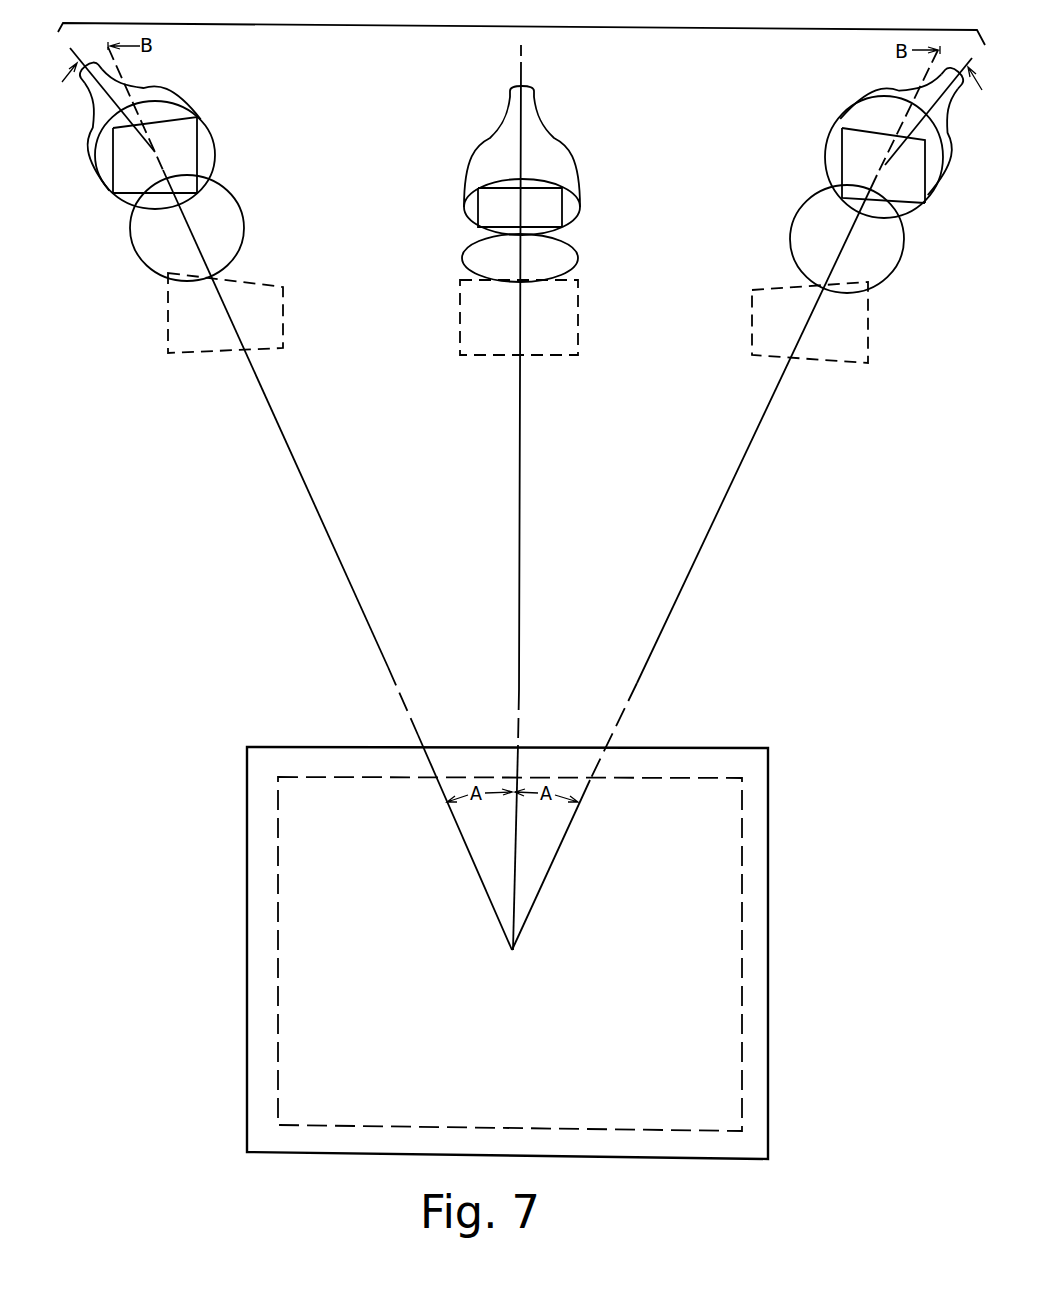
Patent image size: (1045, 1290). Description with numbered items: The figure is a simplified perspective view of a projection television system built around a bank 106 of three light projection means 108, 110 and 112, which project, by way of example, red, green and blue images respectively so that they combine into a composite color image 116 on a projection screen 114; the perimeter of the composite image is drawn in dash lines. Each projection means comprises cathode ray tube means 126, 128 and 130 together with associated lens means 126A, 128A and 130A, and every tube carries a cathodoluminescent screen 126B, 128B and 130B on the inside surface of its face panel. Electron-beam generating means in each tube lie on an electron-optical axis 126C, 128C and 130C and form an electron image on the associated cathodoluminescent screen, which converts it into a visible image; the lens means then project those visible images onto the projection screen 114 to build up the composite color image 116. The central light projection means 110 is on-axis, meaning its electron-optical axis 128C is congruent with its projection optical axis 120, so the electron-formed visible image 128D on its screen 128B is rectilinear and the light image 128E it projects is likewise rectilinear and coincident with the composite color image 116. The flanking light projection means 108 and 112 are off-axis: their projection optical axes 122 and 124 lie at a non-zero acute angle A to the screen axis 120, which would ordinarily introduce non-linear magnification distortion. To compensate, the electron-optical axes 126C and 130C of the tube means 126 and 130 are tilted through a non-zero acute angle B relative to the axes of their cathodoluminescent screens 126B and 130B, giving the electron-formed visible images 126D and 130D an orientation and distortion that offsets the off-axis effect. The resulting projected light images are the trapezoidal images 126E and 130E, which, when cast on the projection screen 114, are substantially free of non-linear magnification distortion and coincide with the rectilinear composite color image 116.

The bank 106 is at (523, 28).
The light projection means 108 is at (165, 196).
The light projection means 110 is at (516, 220).
The light projection means 112 is at (870, 203).
The projection screen 114 is at (247, 927).
The composite color image 116 is at (278, 995).
The projection optical axis 120 is at (517, 663).
The projection optical axis 122 is at (385, 663).
The projection optical axis 124 is at (640, 680).
The cathode ray tube means 126 is at (92, 140).
The lens means 126A is at (130, 237).
The cathodoluminescent screen 126B is at (110, 172).
The electron-optical axis 126C is at (113, 103).
The electron-formed visible image 126D is at (197, 142).
The trapezoidal image 126E is at (159, 299).
The cathode ray tube means 128 is at (490, 138).
The lens means 128A is at (463, 260).
The cathodoluminescent screen 128B is at (475, 203).
The electron-optical axis 128C is at (523, 125).
The electron-formed visible image 128D is at (562, 205).
The light image 128E is at (450, 320).
The cathode ray tube means 130 is at (950, 138).
The lens means 130A is at (905, 248).
The cathodoluminescent screen 130B is at (927, 185).
The electron-optical axis 130C is at (932, 110).
The electron-formed visible image 130D is at (840, 158).
The trapezoidal image 130E is at (878, 312).